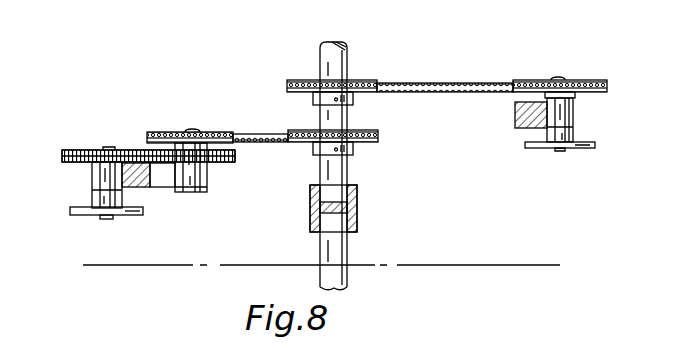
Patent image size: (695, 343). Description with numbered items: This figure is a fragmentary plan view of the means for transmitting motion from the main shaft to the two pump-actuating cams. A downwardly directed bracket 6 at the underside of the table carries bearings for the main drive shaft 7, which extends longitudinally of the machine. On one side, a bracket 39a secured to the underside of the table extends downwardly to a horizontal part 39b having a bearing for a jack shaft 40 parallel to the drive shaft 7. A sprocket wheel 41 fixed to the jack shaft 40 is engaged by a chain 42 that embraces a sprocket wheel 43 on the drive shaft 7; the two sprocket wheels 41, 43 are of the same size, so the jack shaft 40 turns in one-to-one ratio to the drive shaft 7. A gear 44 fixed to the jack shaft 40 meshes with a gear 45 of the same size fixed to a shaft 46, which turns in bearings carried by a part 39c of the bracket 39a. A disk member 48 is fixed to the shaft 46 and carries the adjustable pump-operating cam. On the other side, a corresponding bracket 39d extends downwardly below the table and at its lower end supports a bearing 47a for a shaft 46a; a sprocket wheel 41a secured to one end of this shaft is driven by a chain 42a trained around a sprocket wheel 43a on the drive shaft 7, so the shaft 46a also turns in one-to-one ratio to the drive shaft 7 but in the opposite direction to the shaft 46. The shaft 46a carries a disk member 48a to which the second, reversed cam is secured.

The bracket 6 is at (357, 204).
The main drive shaft 7 is at (348, 248).
The bracket 39a is at (139, 186).
The horizontal part 39b is at (163, 178).
The part 39c is at (95, 177).
The bracket 39d is at (522, 115).
The jack shaft 40 is at (190, 130).
The sprocket wheel 41 is at (160, 140).
The sprocket wheel 41a is at (600, 83).
The chain 42 is at (255, 135).
The chain 42a is at (463, 83).
The sprocket wheel 43 is at (363, 133).
The sprocket wheel 43a is at (382, 67).
The gear 44 is at (233, 152).
The gear 45 is at (77, 150).
The shaft 46 is at (110, 219).
The shaft 46a is at (558, 80).
The bearing 47a is at (577, 112).
The disk member 48 is at (78, 210).
The disk member 48a is at (583, 148).